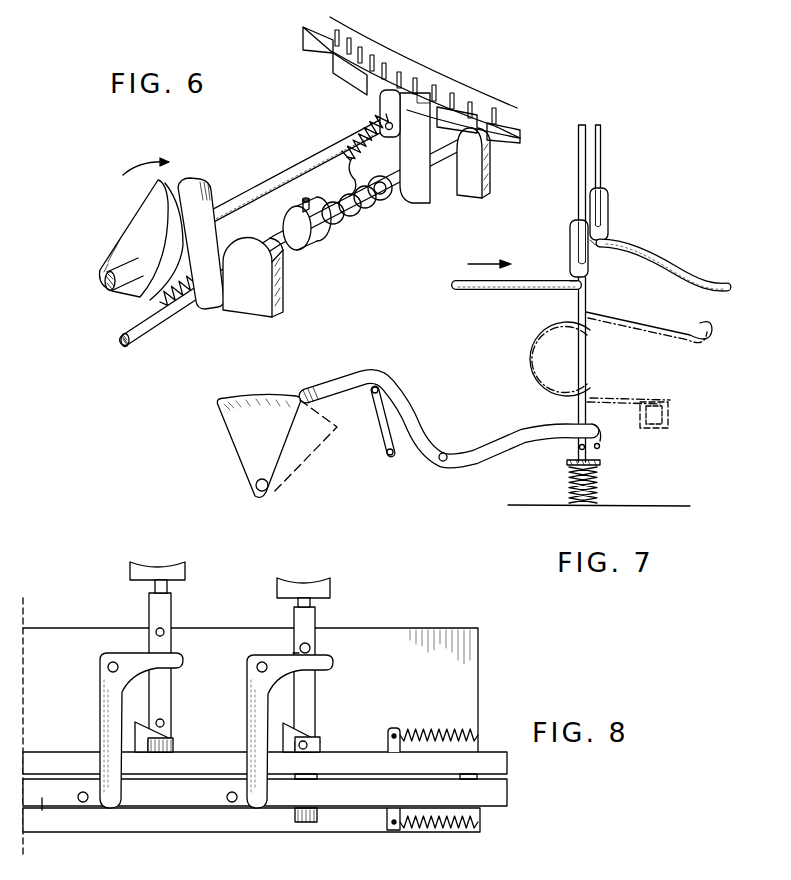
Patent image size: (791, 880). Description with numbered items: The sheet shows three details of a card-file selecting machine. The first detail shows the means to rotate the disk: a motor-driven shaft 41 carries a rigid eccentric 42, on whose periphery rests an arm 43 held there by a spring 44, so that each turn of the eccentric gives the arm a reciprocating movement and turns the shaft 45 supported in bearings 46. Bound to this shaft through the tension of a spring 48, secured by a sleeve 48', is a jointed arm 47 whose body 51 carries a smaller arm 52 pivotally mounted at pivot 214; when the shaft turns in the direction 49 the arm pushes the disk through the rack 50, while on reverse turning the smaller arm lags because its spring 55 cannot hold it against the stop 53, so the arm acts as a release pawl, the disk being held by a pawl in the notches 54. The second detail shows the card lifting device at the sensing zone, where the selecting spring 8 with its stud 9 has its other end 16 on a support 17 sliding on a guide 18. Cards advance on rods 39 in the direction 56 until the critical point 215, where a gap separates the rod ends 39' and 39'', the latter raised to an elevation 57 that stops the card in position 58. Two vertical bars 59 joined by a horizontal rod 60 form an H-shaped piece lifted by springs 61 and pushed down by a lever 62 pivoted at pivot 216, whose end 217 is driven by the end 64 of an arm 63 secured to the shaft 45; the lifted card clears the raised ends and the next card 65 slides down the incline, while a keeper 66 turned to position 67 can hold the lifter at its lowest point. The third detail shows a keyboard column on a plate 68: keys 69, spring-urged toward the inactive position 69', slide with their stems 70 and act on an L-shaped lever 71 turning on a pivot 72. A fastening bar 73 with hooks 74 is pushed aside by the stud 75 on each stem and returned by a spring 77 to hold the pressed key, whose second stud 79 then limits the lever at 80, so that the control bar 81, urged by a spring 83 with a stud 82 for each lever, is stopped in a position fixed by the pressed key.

In FIG. 7, the spring 8 is at (664, 339).
In FIG. 7, the stud 9 is at (588, 302).
In FIG. 7, the end of the spring 16 is at (612, 399).
In FIG. 7, the support 17 is at (670, 413).
In FIG. 7, the guide 18 is at (650, 416).
In FIG. 7, the rods 39 is at (589, 282).
In FIG. 7, the rod end 39' is at (553, 299).
In FIG. 7, the rod end 39'' is at (610, 260).
In FIG. 6, the shaft 41 is at (262, 187).
In FIG. 6, the eccentric 42 is at (145, 215).
In FIG. 6, the arm 43 is at (197, 186).
In FIG. 6, the spring 44 is at (157, 300).
In FIG. 6, the shaft 45 is at (158, 323).
In FIG. 7, the shaft 45 is at (391, 459).
In FIG. 6, the bearings 46 is at (276, 295).
In FIG. 6, the arm 47 is at (405, 198).
In FIG. 6, the spring 48 is at (357, 207).
In FIG. 6, the sleeve 48' is at (313, 234).
In FIG. 6, the direction of turning 49 is at (149, 162).
In FIG. 6, the rack 50 is at (345, 72).
In FIG. 6, the body of the arm 51 is at (353, 170).
In FIG. 6, the smaller arm 52 is at (380, 98).
In FIG. 6, the stop 53 is at (373, 127).
In FIG. 6, the notches 54 is at (377, 60).
In FIG. 6, the spring 55 is at (363, 133).
In FIG. 7, the direction of pressure 56 is at (495, 262).
In FIG. 7, the elevation 57 is at (623, 244).
In FIG. 7, the card position 58 is at (578, 177).
In FIG. 7, the vertical bars 59 is at (585, 378).
In FIG. 7, the horizontal rod 60 is at (577, 450).
In FIG. 7, the springs 61 is at (600, 492).
In FIG. 7, the lever 62 is at (433, 429).
In FIG. 7, the arm 63 is at (379, 422).
In FIG. 7, the end of the arm 64 is at (371, 393).
In FIG. 7, the card 65 is at (602, 150).
In FIG. 7, the keeper 66 is at (240, 455).
In FIG. 7, the keeper position 67 is at (322, 457).
In FIG. 8, the plate 68 is at (480, 665).
In FIG. 8, the keys 69 is at (314, 599).
In FIG. 8, the inactive position 69' is at (177, 576).
In FIG. 8, the stems 70 is at (172, 690).
In FIG. 8, the L-shaped lever 71 is at (100, 705).
In FIG. 8, the pivot 72 is at (106, 667).
In FIG. 8, the fastening bar 73 is at (65, 752).
In FIG. 8, the hooks 74 is at (176, 738).
In FIG. 8, the stud 75 is at (165, 722).
In FIG. 8, the spring 77 is at (431, 731).
In FIG. 8, the second stud 79 is at (311, 646).
In FIG. 8, the limiting position 80 is at (293, 654).
In FIG. 8, the control bar 81 is at (43, 806).
In FIG. 8, the stud 82 is at (84, 802).
In FIG. 8, the spring 83 is at (432, 830).
In FIG. 6, the pivot 214 is at (388, 131).
In FIG. 7, the critical point 215 is at (572, 277).
In FIG. 7, the pivot 216 is at (443, 464).
In FIG. 7, the end of the lever 217 is at (601, 437).